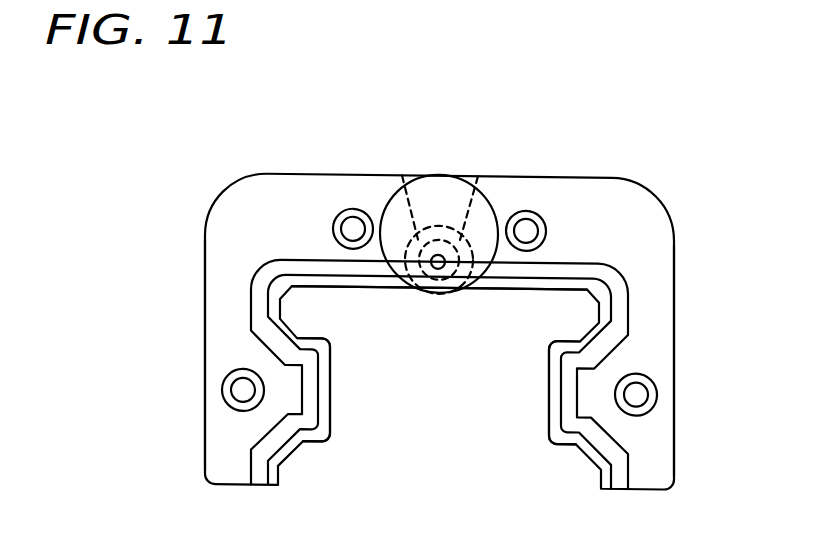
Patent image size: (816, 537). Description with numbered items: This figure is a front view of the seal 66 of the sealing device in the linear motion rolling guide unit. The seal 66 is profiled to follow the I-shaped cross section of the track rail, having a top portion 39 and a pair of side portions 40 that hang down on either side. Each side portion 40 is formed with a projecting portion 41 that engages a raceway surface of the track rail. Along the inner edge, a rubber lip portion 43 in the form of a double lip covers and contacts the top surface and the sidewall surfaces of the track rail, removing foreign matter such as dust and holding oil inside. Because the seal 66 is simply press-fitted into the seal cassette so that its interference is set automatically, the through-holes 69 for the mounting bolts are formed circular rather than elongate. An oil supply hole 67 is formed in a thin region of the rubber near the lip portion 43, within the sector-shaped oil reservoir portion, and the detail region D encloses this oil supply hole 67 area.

The top portion 39 is at (273, 169).
The seal 66 is at (305, 167).
The side portion 40 is at (203, 321).
The lip portion 43 is at (356, 290).
The projecting portion 41 is at (297, 391).
The through-hole 69 is at (352, 220).
The oil supply hole 67 is at (436, 266).
The detail region D is at (463, 174).